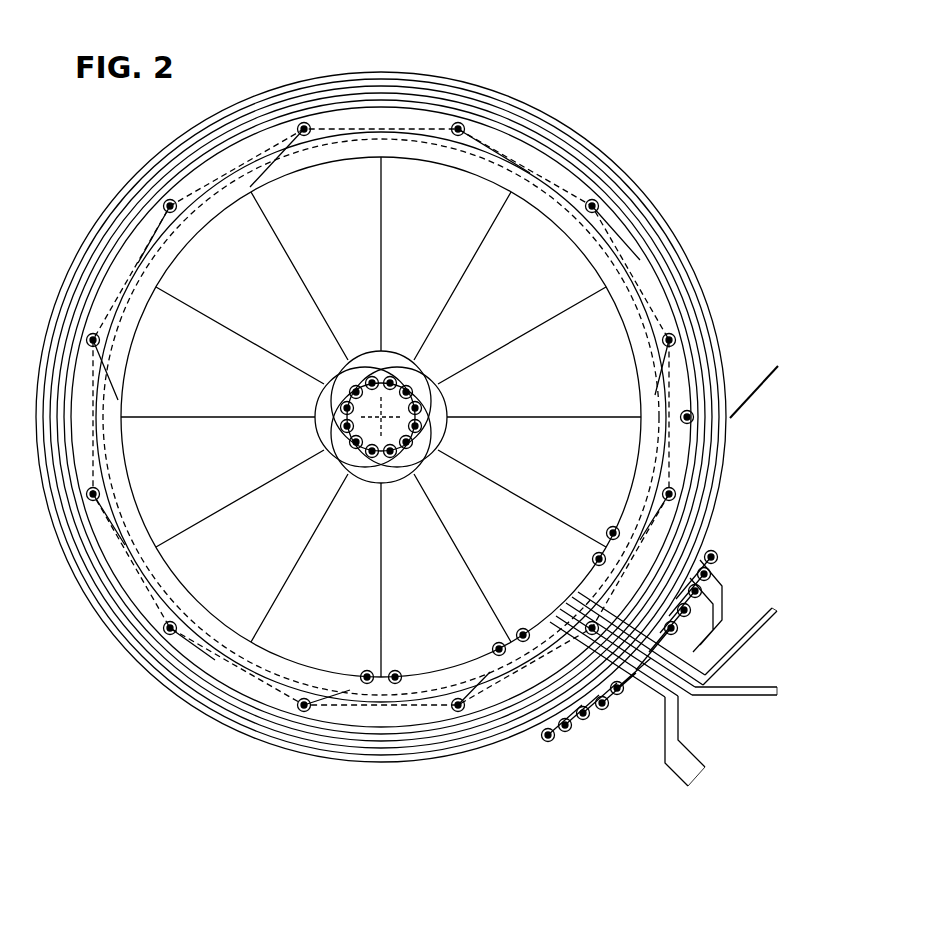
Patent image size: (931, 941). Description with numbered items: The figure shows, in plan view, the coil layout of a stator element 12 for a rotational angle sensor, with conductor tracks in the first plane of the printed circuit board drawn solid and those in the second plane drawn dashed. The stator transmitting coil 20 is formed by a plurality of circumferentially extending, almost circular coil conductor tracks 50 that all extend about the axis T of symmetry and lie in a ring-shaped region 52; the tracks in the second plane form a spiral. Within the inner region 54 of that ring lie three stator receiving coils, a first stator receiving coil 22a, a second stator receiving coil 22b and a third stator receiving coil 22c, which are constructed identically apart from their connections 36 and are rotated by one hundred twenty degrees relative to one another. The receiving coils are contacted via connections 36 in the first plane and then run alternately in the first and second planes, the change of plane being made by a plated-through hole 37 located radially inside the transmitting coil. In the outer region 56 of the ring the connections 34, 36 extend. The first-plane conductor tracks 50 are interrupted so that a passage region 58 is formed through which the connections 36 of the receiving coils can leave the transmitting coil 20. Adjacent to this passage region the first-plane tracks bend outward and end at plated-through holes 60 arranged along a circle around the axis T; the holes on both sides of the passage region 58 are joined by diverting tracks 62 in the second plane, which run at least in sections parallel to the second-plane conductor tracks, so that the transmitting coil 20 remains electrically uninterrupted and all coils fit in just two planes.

The stator element 12 is at (697, 95).
The stator transmitting coil 20 is at (527, 104).
The coil conductor tracks 50 is at (682, 252).
The ring-shaped region 52 is at (75, 278).
The plated-through hole 37 is at (303, 122).
The inner region 54 is at (157, 500).
The axis of symmetry T is at (340, 463).
The connections 34 is at (752, 370).
The outer region 56 is at (607, 813).
The passage region 58 is at (680, 692).
The plated-through holes 60 is at (717, 552).
The diverting tracks 62 is at (718, 585).
The connections 36 is at (771, 600).
The first stator receiving coil 22a is at (766, 618).
The second stator receiving coil 22b is at (760, 697).
The third stator receiving coil 22c is at (668, 768).